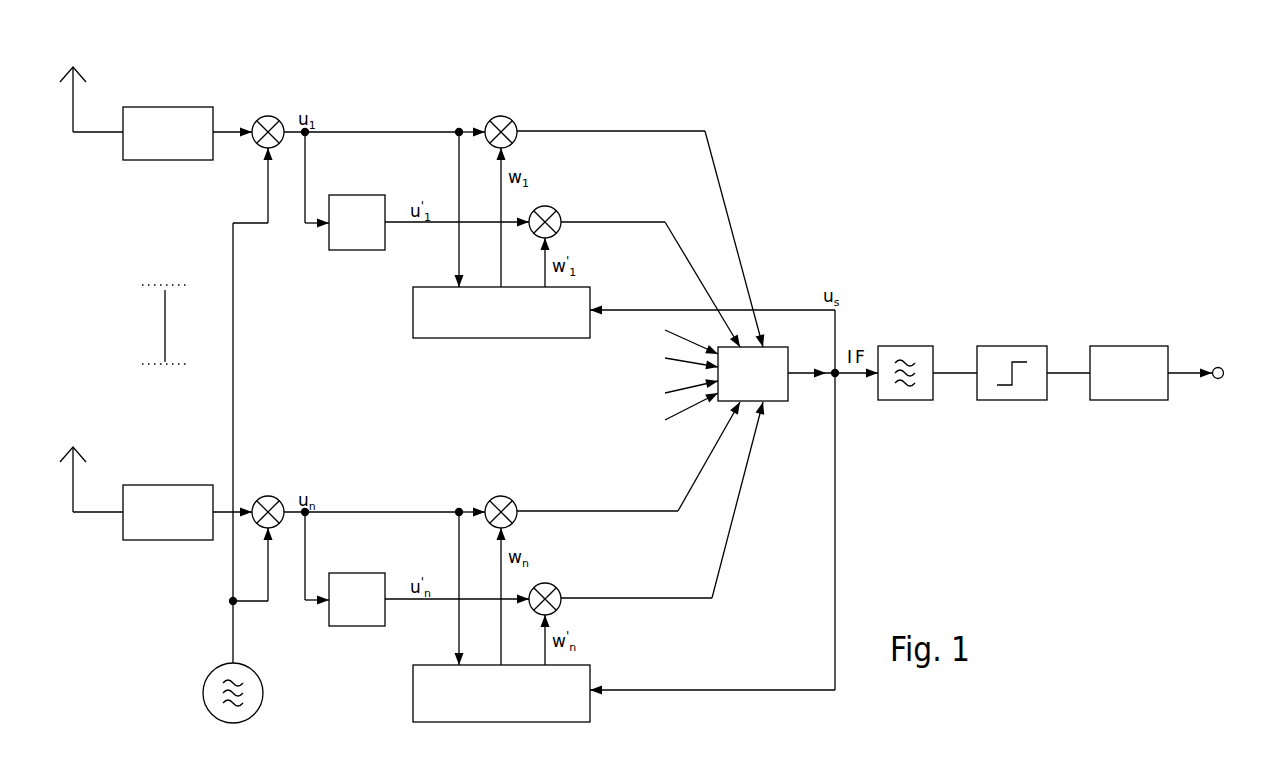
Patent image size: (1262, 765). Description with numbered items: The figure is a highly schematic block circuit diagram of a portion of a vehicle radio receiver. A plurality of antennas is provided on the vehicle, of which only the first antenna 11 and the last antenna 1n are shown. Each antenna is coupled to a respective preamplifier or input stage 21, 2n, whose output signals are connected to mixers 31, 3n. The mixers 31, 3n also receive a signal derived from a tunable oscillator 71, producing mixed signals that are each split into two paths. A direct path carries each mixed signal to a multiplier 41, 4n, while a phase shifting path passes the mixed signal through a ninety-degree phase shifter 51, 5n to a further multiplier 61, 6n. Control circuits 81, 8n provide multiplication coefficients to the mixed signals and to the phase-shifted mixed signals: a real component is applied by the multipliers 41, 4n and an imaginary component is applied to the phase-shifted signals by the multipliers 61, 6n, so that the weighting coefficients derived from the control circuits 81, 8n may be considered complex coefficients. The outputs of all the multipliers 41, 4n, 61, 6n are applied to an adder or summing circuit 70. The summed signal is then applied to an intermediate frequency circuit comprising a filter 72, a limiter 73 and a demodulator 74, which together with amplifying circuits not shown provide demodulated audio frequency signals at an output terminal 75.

The antenna 11 is at (91, 89).
The input stage 21 is at (187, 122).
The mixer 31 is at (346, 158).
The multiplier 41 is at (612, 220).
The 90° phase shifter 51 is at (417, 191).
The multiplier 61 is at (636, 268).
The control circuit 81 is at (624, 235).
The antenna 1n is at (91, 466).
The input stage 2n is at (187, 501).
The mixer 3n is at (346, 538).
The multiplier 4n is at (600, 532).
The 90° phase shifter 5n is at (417, 569).
The multiplier 6n is at (648, 533).
The control circuit 8n is at (624, 617).
The summing circuit 70 is at (771, 500).
The tunable oscillator 71 is at (248, 473).
The filter 72 is at (927, 361).
The limiter 73 is at (1033, 361).
The demodulator 74 is at (1151, 361).
The output terminal 75 is at (1225, 363).